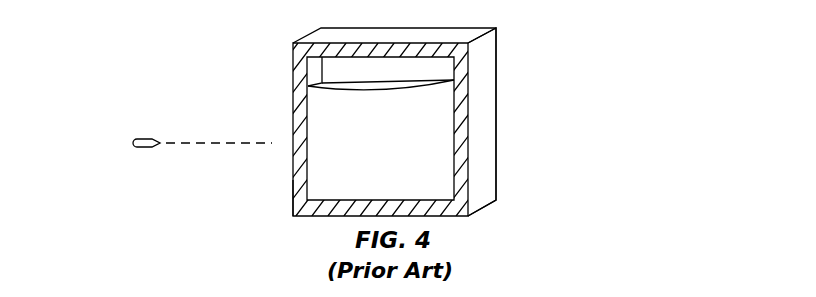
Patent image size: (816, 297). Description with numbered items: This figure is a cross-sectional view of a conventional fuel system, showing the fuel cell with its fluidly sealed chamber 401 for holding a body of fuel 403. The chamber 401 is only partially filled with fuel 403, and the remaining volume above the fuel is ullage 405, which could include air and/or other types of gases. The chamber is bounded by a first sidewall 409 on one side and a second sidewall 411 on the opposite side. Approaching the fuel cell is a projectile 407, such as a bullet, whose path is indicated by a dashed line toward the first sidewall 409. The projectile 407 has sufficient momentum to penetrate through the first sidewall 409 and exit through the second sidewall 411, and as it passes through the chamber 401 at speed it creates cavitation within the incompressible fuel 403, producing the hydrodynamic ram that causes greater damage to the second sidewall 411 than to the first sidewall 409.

The chamber 401 is at (440, 139).
The body of fuel 403 is at (296, 186).
The ullage 405 is at (442, 67).
The projectile 407 is at (138, 147).
The first sidewall 409 is at (289, 92).
The second sidewall 411 is at (491, 177).